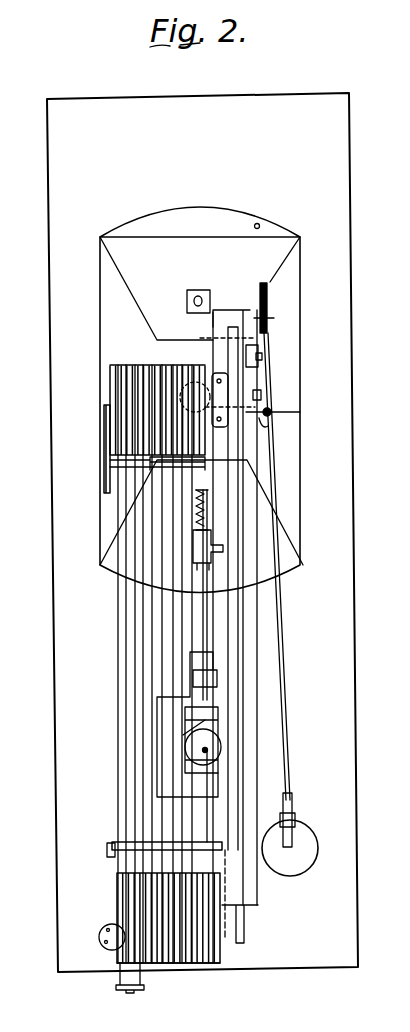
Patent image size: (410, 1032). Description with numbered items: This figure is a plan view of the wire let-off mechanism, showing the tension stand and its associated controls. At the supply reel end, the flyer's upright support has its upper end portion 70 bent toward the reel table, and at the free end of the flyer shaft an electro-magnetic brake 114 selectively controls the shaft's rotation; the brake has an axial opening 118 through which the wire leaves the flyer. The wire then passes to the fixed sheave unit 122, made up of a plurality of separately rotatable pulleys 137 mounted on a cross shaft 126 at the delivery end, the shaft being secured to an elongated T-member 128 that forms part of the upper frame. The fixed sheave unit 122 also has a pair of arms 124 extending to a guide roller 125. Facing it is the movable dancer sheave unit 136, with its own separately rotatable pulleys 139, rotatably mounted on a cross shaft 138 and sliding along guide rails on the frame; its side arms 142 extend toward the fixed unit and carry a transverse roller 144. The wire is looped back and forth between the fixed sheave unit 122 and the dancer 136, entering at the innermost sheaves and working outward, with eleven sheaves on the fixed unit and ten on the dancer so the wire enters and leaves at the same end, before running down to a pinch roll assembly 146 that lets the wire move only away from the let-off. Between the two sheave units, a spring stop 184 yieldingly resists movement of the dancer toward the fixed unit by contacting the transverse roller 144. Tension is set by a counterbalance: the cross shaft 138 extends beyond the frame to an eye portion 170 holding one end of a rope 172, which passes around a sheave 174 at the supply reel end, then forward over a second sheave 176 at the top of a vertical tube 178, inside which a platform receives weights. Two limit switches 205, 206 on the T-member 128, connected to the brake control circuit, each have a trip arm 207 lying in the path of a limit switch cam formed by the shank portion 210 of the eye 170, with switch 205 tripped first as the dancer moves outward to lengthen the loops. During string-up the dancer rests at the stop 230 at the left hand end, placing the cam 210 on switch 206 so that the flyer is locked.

The upper end portion 70 is at (157, 786).
The electro-magnetic brake 114 is at (150, 731).
The axial opening 118 is at (207, 750).
The fixed sheave unit 122 is at (236, 953).
The arms 124 is at (117, 900).
The guide roller 125 is at (110, 845).
The cross shaft 126 is at (240, 930).
The T-member 128 is at (258, 885).
The dancer sheave unit 136 is at (100, 380).
The pulleys 137 is at (183, 971).
The cross shaft 138 is at (104, 410).
The pulleys 139 is at (148, 361).
The side arms 142 is at (104, 466).
The transverse roller 144 is at (157, 492).
The pinch roll assembly 146 is at (125, 985).
The eye portion 170 is at (272, 412).
The rope 172 is at (280, 600).
The sheave 174 is at (268, 300).
The second sheave 176 is at (292, 803).
The tube 178 is at (313, 858).
The spring stop 184 is at (190, 539).
The limit switch 205 is at (260, 395).
The limit switch 206 is at (254, 355).
The trip arm 207 is at (261, 358).
The shank portion 210 is at (268, 416).
The stop 230 is at (218, 310).